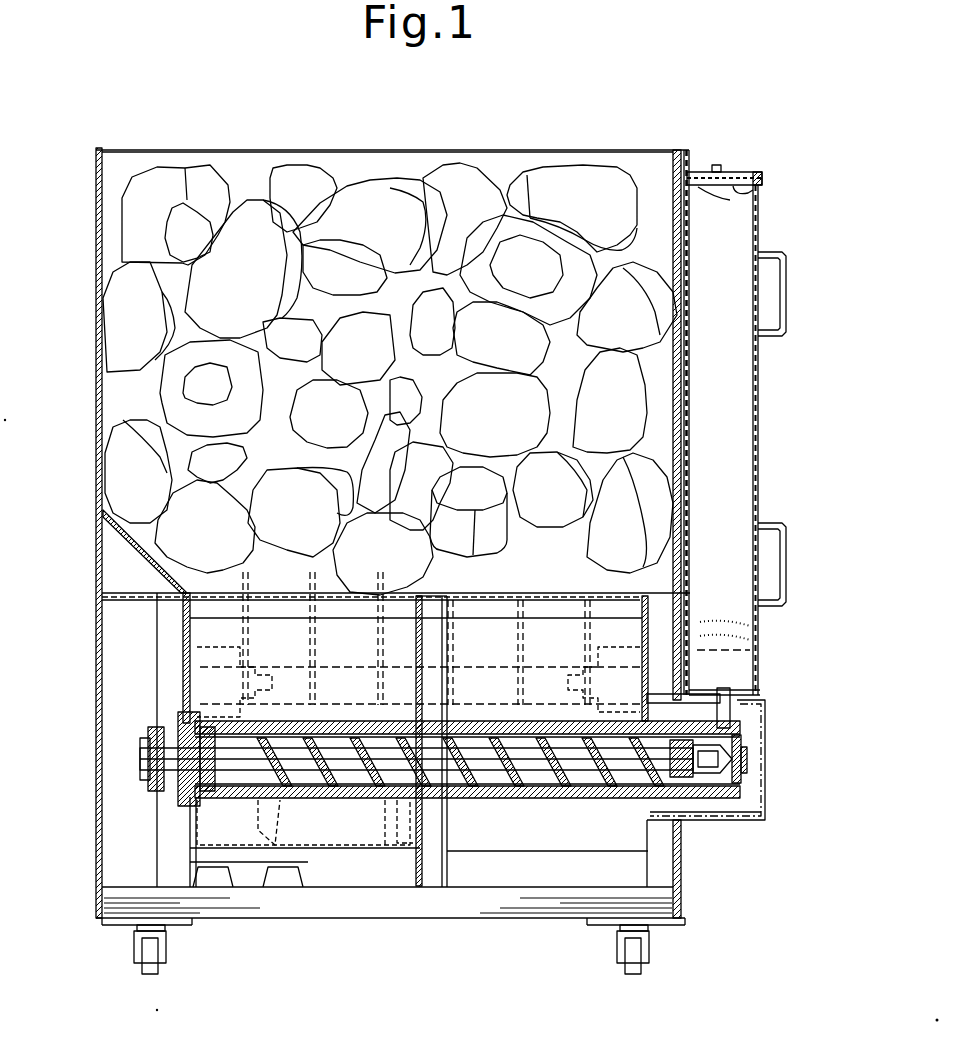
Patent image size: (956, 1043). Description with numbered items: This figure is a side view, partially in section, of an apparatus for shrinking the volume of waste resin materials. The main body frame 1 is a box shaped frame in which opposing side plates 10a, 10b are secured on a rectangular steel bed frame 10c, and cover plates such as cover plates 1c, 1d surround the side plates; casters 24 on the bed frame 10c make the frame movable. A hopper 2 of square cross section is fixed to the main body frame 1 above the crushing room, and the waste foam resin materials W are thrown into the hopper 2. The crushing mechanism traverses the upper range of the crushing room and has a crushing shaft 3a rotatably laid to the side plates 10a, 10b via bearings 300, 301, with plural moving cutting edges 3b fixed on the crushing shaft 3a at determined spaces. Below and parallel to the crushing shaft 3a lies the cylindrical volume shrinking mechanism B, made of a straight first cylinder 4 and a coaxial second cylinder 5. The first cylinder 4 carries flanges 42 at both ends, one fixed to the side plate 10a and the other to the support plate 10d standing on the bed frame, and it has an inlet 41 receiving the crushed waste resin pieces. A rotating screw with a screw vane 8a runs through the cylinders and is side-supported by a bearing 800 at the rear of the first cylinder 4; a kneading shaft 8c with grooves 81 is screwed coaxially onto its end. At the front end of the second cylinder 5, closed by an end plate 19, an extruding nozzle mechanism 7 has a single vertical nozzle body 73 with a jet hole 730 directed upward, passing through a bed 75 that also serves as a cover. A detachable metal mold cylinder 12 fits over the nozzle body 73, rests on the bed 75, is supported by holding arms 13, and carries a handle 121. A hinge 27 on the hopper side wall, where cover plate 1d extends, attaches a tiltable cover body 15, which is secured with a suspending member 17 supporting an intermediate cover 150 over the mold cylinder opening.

The main body frame 1 is at (100, 877).
The cover plate 1c is at (100, 545).
The cover plate 1d is at (690, 417).
The hopper 2 is at (583, 160).
The waste foam resin materials W is at (355, 205).
The crushing shaft 3a is at (540, 665).
The moving cutting edges 3b is at (640, 590).
The first cylinder 4 is at (330, 797).
The second cylinder 5 is at (508, 798).
The extruding nozzle mechanism 7 is at (707, 800).
The screw vane 8a is at (364, 797).
The kneading shaft 8c is at (723, 803).
The side plate 10a is at (105, 605).
The side plate 10b is at (690, 600).
The bed frame 10c is at (556, 900).
The support plate 10d is at (428, 857).
The metal mold cylinder 12 is at (760, 372).
The holding arms 13 is at (760, 650).
The cover body 15 is at (742, 172).
The suspending member 17 is at (740, 190).
The end plate 19 is at (745, 755).
The casters 24 is at (148, 968).
The hinge 27 is at (692, 168).
The inlet 41 is at (185, 625).
The flanges 42 is at (188, 700).
The nozzle body 73 is at (760, 708).
The bed 75 is at (735, 778).
The grooves 81 is at (730, 790).
The handle 121 is at (787, 290).
The intermediate cover 150 is at (730, 200).
The bearing 300 is at (760, 622).
The bearing 301 is at (190, 660).
The jet hole 730 is at (728, 700).
The bearing 800 is at (180, 782).
The volume shrinking mechanism B is at (300, 805).